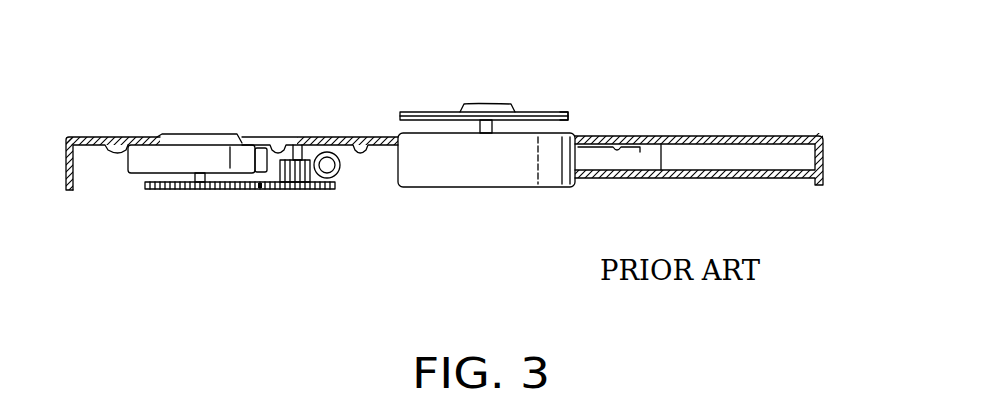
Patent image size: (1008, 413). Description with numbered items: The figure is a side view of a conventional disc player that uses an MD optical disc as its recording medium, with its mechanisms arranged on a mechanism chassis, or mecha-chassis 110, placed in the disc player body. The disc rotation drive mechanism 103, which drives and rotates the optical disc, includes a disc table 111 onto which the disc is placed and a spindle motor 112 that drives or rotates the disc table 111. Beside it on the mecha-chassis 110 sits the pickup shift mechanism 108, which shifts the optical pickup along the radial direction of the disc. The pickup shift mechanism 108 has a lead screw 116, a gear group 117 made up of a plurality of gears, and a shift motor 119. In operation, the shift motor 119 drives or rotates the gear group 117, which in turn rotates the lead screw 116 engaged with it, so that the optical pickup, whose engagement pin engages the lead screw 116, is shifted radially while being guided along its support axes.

The disc rotation drive mechanism 103 is at (533, 115).
The pickup shift mechanism 108 is at (298, 218).
The mecha-chassis 110 is at (885, 159).
The disc table 111 is at (570, 115).
The spindle motor 112 is at (517, 172).
The lead screw 116 is at (327, 165).
The gear group 117 is at (262, 189).
The shift motor 119 is at (215, 152).